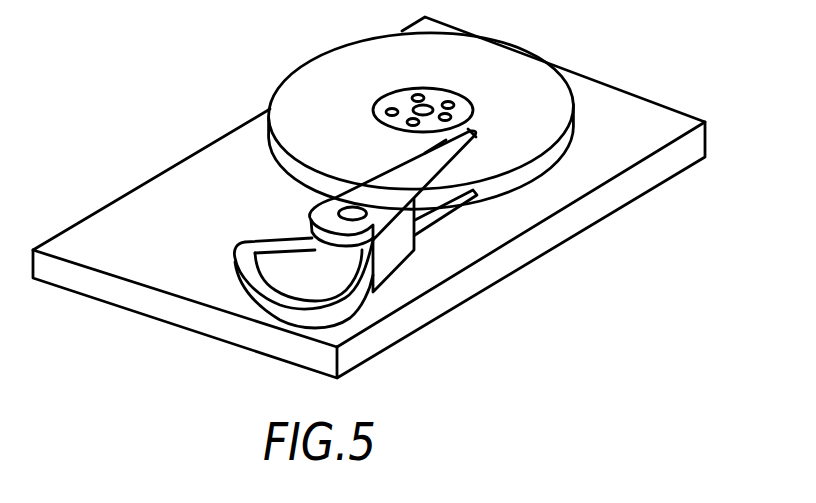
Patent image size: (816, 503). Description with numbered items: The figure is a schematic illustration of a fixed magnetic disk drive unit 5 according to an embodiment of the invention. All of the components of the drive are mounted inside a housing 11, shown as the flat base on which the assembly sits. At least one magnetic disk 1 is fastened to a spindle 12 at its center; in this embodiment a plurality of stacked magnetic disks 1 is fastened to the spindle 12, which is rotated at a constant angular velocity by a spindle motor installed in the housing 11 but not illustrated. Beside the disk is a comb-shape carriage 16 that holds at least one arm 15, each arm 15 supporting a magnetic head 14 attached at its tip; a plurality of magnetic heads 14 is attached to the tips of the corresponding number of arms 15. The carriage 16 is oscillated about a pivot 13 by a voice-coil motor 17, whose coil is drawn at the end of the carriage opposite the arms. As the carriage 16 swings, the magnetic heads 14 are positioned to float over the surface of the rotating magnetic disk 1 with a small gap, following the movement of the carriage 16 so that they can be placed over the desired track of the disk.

The magnetic disk 1 is at (503, 53).
The fixed magnetic disk drive unit 5 is at (138, 316).
The housing 11 is at (646, 110).
The spindle 12 is at (392, 106).
The pivot 13 is at (333, 208).
The magnetic head 14 is at (475, 135).
The arm 15 is at (428, 153).
The comb-shape carriage 16 is at (402, 247).
The voice-coil motor 17 is at (352, 312).